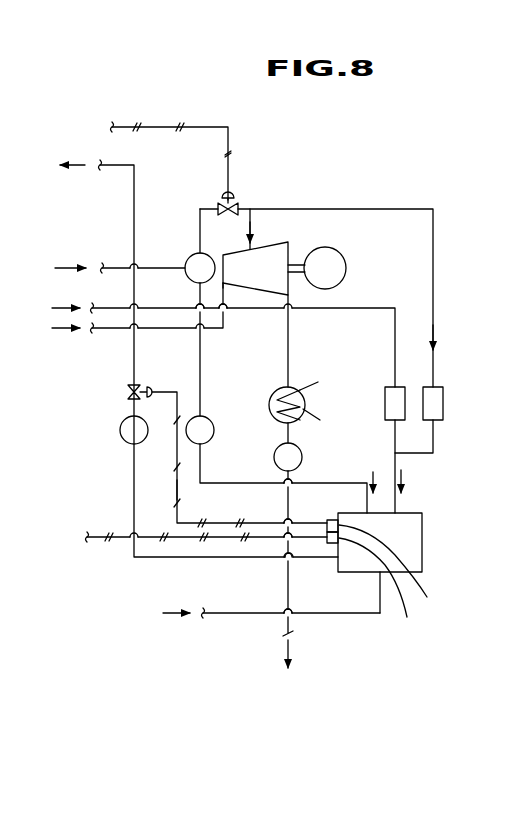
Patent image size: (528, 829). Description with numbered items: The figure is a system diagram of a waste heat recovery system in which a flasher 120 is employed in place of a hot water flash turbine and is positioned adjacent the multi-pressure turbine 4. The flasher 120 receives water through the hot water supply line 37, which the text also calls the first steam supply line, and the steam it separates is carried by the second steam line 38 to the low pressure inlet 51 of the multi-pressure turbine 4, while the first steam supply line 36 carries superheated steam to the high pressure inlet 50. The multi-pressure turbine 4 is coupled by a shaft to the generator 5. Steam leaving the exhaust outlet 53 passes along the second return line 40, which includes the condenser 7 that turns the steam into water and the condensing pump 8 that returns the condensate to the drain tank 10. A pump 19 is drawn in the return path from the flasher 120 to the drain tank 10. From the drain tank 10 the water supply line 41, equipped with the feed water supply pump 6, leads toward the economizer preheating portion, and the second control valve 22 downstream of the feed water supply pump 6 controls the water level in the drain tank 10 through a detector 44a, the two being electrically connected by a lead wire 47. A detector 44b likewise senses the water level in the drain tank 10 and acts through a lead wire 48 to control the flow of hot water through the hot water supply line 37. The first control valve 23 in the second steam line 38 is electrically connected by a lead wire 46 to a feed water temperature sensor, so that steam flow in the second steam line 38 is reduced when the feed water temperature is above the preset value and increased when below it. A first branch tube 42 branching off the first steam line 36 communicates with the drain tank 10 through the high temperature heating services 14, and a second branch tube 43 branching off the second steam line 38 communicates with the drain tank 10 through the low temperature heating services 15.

The multi-pressure turbine 4 is at (283, 253).
The generator 5 is at (346, 262).
The feed water supply pump 6 is at (143, 441).
The condenser 7 is at (307, 405).
The condensing pump 8 is at (302, 457).
The drain tank 10 is at (420, 547).
The high temperature heating services 14 is at (393, 387).
The low temperature heating services 15 is at (440, 403).
The pump 19 is at (210, 438).
The second control valve 22 is at (140, 384).
The first control valve 23 is at (234, 195).
The first steam supply line 36 is at (108, 333).
The hot water supply line 37 is at (122, 265).
The second steam line 38 is at (212, 207).
The second return line 40 is at (227, 616).
The water supply line 41 is at (100, 163).
The first branch tube 42 is at (100, 305).
The second branch tube 43 is at (433, 278).
The detector 44a is at (406, 570).
The detector 44b is at (392, 592).
The lead wire 46 is at (165, 127).
The lead wire 47 is at (177, 492).
The lead wire 48 is at (97, 533).
The high pressure inlet 50 is at (226, 283).
The low pressure inlet 51 is at (252, 247).
The exhaust outlet 53 is at (291, 296).
The flasher 120 is at (190, 257).